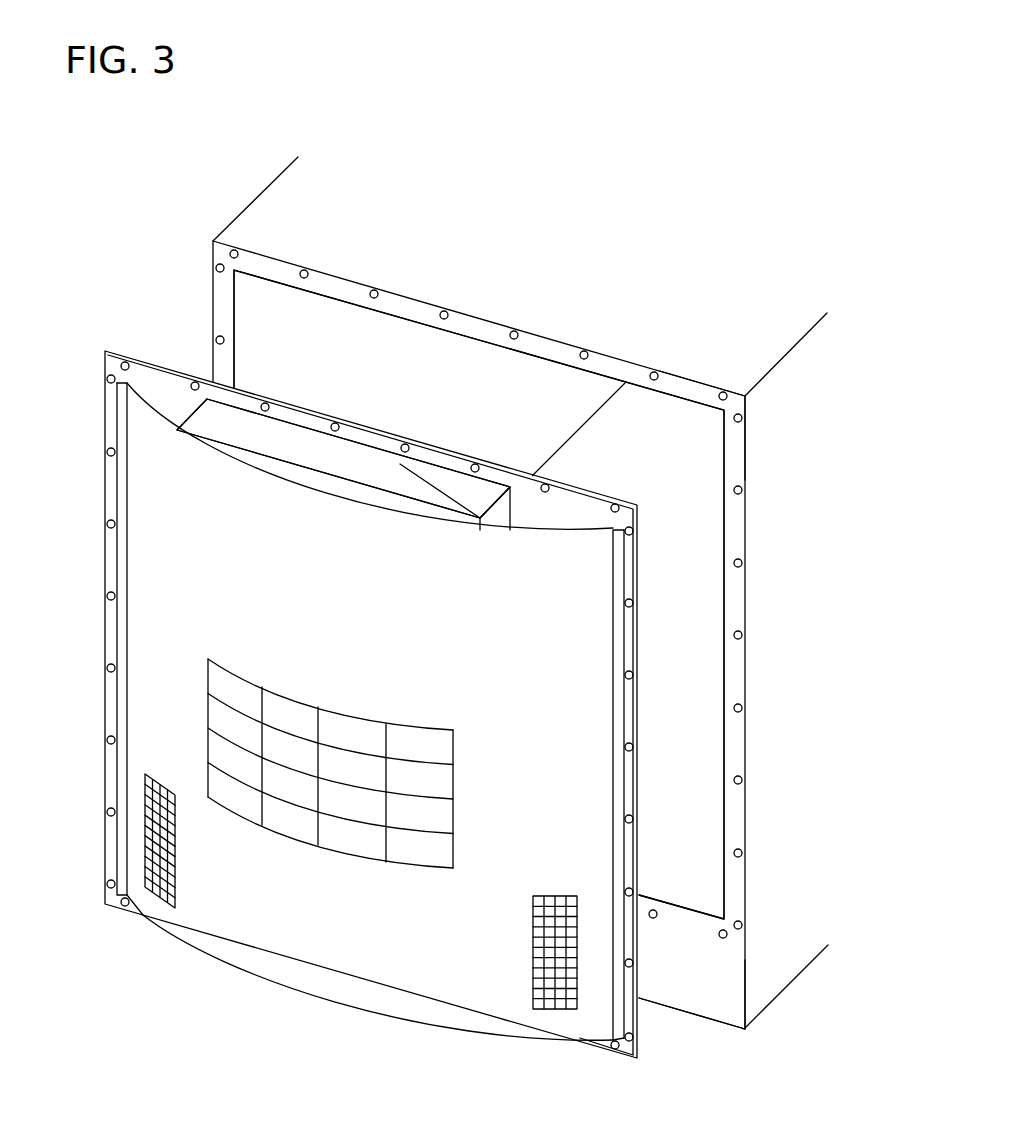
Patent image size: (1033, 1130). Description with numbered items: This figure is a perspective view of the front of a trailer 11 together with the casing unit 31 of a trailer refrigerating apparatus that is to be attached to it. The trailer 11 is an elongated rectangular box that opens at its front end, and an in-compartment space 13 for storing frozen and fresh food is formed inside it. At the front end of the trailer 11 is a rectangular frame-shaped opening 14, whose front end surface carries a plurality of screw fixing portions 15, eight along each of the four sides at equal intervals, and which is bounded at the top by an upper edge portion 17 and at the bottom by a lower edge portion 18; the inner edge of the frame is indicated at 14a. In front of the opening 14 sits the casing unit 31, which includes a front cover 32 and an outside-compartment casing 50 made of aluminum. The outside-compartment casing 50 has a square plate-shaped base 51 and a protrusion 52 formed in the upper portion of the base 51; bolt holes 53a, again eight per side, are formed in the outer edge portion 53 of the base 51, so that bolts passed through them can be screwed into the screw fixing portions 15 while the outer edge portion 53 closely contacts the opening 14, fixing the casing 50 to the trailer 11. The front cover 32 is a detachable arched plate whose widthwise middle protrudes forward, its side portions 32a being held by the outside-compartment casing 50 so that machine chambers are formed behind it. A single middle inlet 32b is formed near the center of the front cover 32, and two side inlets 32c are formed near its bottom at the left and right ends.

The trailer 11 is at (243, 212).
The in-compartment space 13 is at (488, 622).
The opening 14 is at (534, 622).
The frame opening edge 14a is at (248, 293).
The screw fixing portions 15 is at (513, 335).
The upper edge portion 17 is at (697, 392).
The lower edge portion 18 is at (735, 952).
The casing unit 31 is at (361, 675).
The front cover 32 is at (371, 711).
The side portions 32a is at (122, 578).
The middle inlet 32b is at (284, 697).
The side inlets 32c is at (168, 855).
The outside-compartment casing 50 is at (157, 360).
The base 51 is at (588, 520).
The protrusion 52 is at (343, 438).
The outer edge portion 53 is at (312, 423).
The bolt holes 53a is at (463, 460).